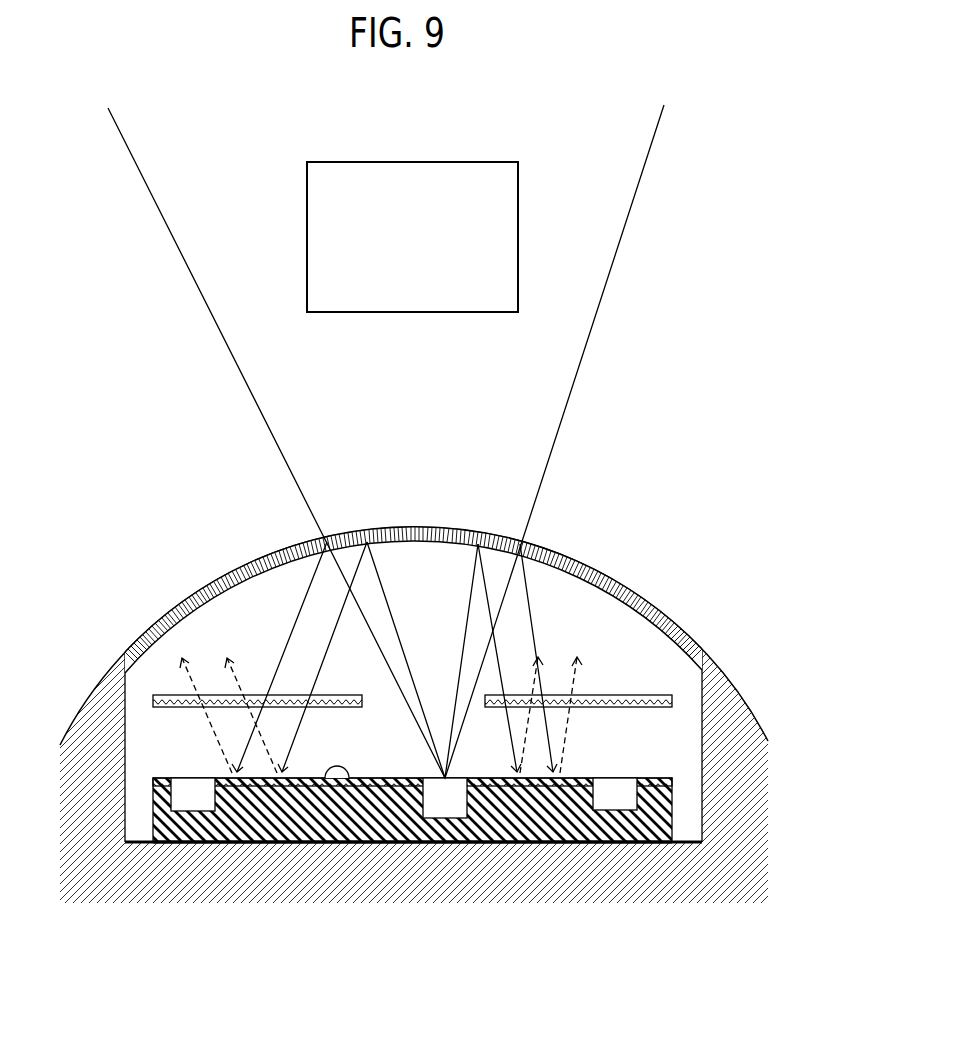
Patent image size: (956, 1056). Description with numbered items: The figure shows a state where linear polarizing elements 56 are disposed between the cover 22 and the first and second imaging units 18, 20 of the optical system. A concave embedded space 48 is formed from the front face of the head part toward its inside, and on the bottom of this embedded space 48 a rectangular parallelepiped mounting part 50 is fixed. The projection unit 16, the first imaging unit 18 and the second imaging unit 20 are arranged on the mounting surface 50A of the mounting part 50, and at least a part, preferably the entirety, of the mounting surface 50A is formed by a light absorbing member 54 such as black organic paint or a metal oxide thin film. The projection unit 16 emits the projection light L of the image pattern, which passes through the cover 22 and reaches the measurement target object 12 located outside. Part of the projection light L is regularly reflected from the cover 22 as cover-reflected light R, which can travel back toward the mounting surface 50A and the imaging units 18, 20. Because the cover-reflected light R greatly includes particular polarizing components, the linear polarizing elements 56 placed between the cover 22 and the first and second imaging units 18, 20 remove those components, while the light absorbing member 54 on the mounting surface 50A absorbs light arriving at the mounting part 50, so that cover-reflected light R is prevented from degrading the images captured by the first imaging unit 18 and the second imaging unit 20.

The measurement target object 12 is at (414, 162).
The projection light L is at (548, 430).
The cover-reflected light R is at (281, 662).
The cover 22 is at (690, 642).
The embedded space 48 is at (607, 622).
The linear polarizing element 56 is at (166, 708).
The light absorbing member 54 is at (385, 778).
The mounting part 50 is at (672, 807).
The mounting surface 50A is at (341, 770).
The projection unit 16 is at (447, 808).
The first imaging unit 18 is at (193, 803).
The second imaging unit 20 is at (616, 803).